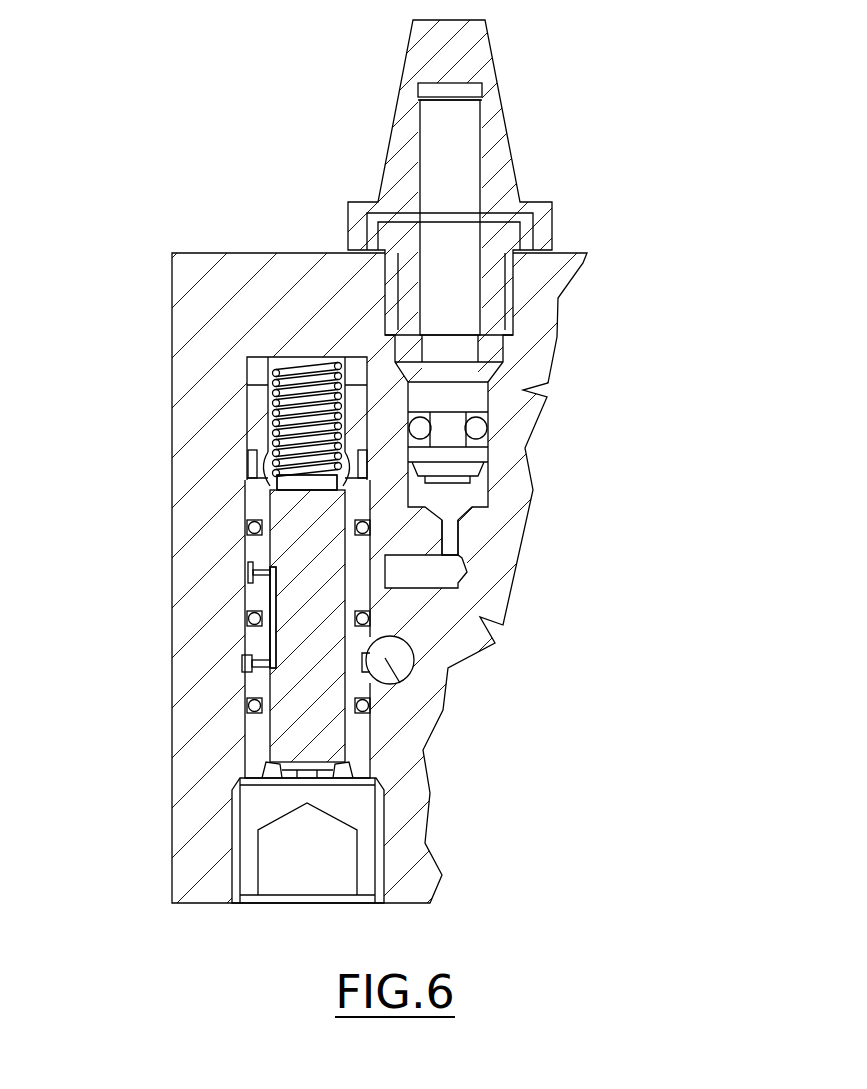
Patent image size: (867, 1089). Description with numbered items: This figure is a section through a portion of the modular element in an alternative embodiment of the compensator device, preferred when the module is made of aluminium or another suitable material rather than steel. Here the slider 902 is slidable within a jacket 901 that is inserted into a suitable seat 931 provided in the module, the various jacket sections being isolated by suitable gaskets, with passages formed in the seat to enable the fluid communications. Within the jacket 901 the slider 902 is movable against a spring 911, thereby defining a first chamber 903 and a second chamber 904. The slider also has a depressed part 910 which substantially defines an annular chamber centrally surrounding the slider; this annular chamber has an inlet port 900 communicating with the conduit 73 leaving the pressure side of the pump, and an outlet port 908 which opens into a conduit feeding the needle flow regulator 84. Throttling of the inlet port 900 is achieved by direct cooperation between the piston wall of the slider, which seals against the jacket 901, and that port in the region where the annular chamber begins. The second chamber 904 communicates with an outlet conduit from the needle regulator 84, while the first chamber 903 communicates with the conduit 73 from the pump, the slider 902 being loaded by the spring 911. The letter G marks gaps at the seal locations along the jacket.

The needle flow regulator 84 is at (592, 378).
The conduit 73 is at (408, 676).
The inlet port 900 is at (245, 657).
The jacket 901 is at (262, 495).
The slider 902 is at (308, 712).
The first chamber 903 is at (332, 770).
The second chamber 904 is at (275, 453).
The outlet port 908 is at (260, 572).
The depressed part 910 is at (272, 580).
The spring 911 is at (322, 372).
The seat 931 is at (260, 465).
The gap G is at (257, 368).